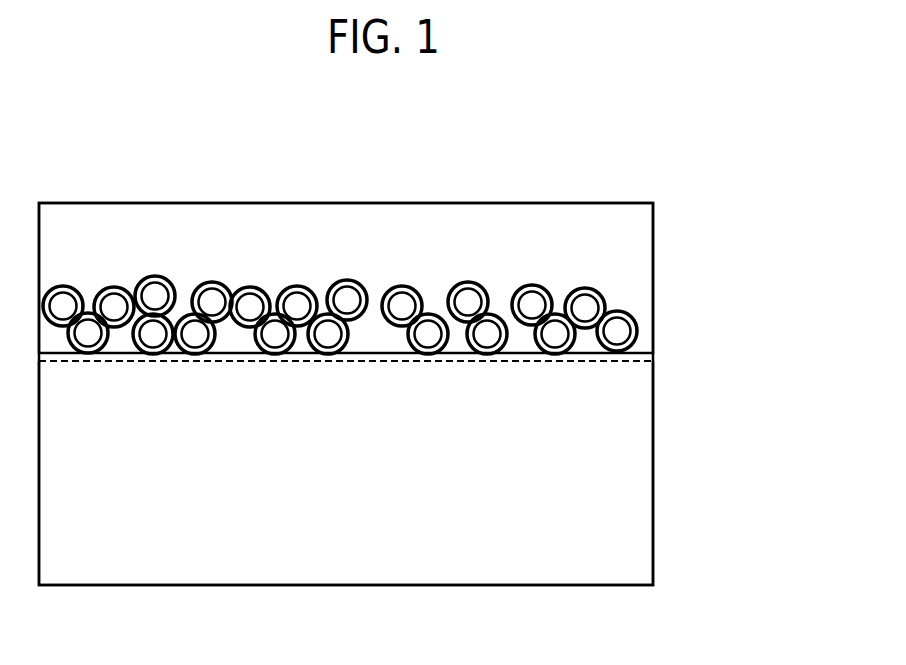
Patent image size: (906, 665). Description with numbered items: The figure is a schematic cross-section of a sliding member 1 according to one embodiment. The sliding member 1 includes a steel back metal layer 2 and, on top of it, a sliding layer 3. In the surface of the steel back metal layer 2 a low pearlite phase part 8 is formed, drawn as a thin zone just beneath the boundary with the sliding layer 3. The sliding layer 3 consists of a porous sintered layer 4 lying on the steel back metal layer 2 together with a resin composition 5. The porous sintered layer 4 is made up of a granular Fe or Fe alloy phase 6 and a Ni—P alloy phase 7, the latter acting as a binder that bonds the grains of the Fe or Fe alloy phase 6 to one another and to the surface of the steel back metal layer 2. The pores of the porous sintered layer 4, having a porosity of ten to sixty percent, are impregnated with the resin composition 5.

The sliding member 1 is at (622, 167).
The steel back metal layer 2 is at (655, 482).
The sliding layer 3 is at (655, 213).
The porous sintered layer 4 is at (388, 224).
The resin composition 5 is at (533, 243).
The Fe or Fe alloy phase 6 is at (333, 280).
The Ni—P alloy phase 7 is at (347, 285).
The low pearlite phase part 8 is at (650, 360).